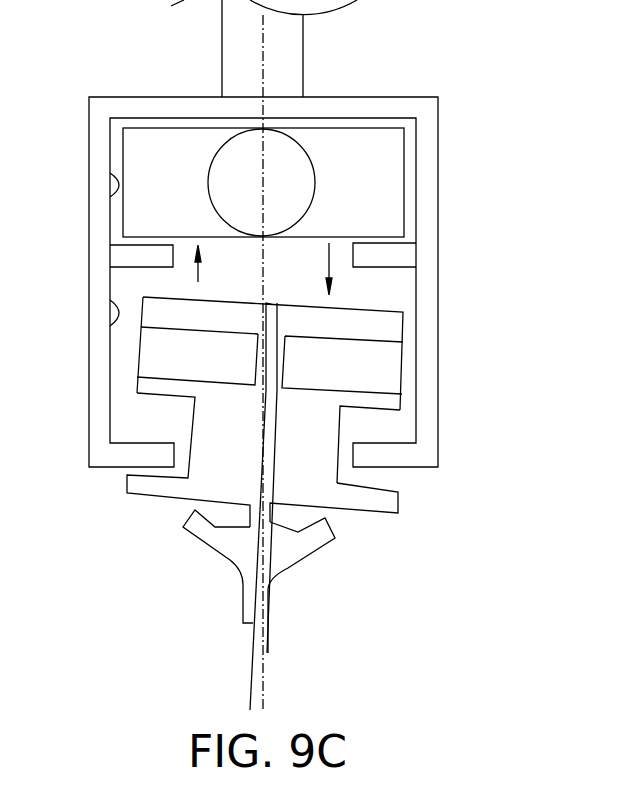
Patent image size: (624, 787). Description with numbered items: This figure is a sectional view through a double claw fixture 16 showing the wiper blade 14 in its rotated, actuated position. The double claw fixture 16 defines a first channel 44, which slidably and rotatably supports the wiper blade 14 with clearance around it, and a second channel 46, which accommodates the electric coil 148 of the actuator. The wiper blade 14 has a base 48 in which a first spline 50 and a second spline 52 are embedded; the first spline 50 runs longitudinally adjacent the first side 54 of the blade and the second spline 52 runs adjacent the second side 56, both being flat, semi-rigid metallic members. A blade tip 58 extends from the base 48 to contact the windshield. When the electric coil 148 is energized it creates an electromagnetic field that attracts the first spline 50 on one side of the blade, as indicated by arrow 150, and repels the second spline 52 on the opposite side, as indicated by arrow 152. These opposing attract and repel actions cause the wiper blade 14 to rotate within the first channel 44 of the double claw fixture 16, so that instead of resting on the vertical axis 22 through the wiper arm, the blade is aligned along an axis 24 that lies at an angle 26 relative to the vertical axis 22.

The wiper blade 14 is at (337, 473).
The double claw fixture 16 is at (343, 103).
The vertical axis 22 is at (266, 660).
The axis 24 is at (250, 677).
The angle 26 is at (210, 705).
The first channel 44 is at (118, 183).
The second channel 46 is at (122, 307).
The base 48 is at (388, 327).
The first spline 50 is at (155, 363).
The second spline 52 is at (388, 368).
The first side 54 is at (140, 353).
The second side 56 is at (417, 403).
The blade tip 58 is at (243, 605).
The electric coil 148 is at (386, 182).
The arrow 150 is at (198, 282).
The arrow 152 is at (329, 267).